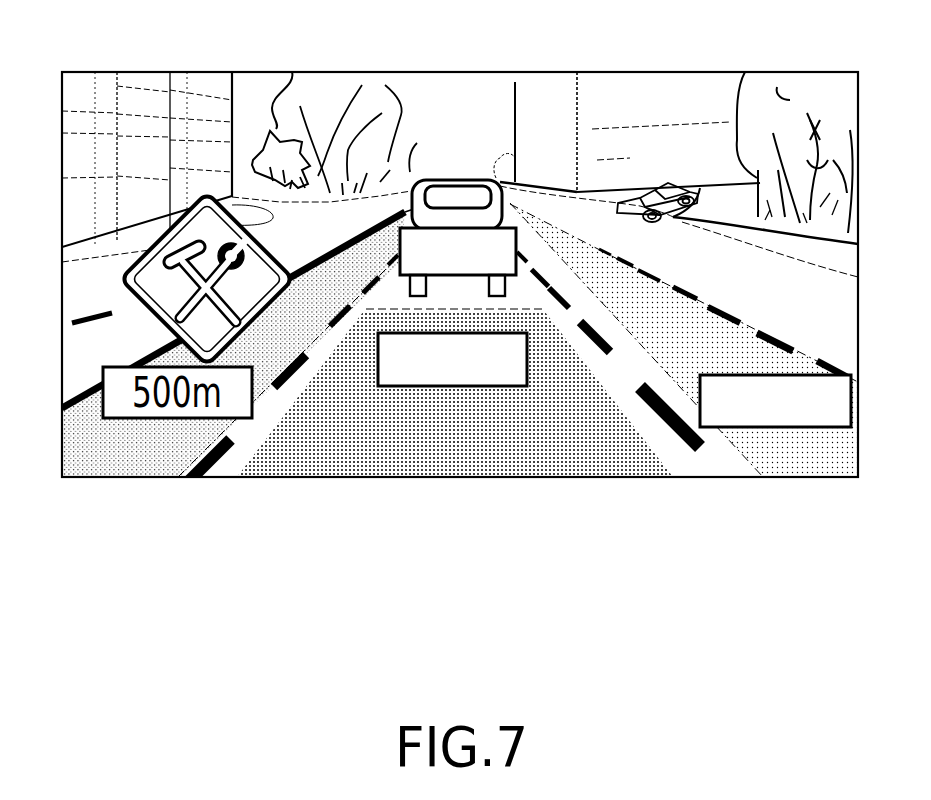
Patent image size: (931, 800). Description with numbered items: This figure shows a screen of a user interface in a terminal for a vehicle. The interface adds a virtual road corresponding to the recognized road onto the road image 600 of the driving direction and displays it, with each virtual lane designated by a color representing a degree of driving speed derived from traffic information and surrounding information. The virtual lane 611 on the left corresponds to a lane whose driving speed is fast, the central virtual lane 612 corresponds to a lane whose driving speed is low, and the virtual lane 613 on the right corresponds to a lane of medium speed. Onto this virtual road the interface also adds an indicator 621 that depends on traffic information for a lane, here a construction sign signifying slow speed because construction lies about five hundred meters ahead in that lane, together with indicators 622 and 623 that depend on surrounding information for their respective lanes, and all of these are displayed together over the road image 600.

The road image 600 is at (466, 71).
The virtual lane 611 is at (123, 455).
The virtual lane 612 is at (445, 452).
The virtual lane 613 is at (797, 447).
The indicator 621 is at (112, 281).
The indicator 622 is at (392, 373).
The indicator 623 is at (833, 397).